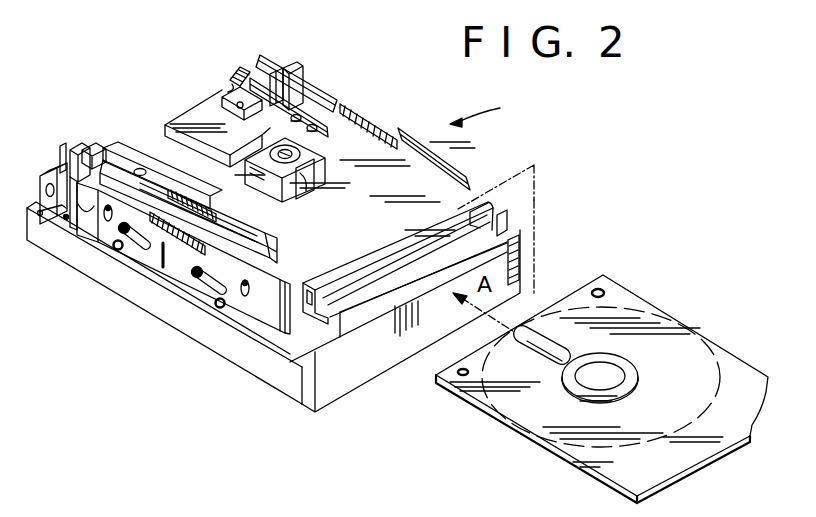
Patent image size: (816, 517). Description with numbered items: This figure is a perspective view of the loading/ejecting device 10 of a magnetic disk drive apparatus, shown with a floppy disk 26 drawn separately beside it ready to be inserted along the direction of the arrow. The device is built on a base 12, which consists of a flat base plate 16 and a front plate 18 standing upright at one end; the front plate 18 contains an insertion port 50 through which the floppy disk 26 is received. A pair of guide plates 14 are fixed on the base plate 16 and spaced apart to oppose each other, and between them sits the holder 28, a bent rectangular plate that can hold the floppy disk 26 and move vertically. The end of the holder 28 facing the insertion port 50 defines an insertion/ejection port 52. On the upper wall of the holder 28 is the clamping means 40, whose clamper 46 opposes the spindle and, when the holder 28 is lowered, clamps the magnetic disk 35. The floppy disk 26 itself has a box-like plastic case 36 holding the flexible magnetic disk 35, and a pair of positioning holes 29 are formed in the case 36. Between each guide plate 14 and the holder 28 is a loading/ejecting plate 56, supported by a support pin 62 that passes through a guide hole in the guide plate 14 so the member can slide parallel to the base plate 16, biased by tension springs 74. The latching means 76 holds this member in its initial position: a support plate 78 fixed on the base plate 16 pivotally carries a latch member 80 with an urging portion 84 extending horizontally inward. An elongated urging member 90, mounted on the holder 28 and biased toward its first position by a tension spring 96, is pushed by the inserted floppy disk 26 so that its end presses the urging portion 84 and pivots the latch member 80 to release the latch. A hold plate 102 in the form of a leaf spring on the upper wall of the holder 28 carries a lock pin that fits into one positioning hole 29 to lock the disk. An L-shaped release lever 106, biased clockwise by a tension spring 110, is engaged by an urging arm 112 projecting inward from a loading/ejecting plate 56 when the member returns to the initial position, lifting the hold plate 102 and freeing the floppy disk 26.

The loading/ejecting device 10 is at (488, 108).
The base 12 is at (212, 353).
The guide plates 14 is at (325, 82).
The base plate 16 is at (55, 250).
The front plate 18 is at (521, 236).
The floppy disk 26 is at (663, 305).
The holder 28 is at (455, 169).
The positioning holes 29 is at (596, 289).
The magnetic disk 35 is at (558, 432).
The case 36 is at (474, 380).
The clamping means 40 is at (331, 167).
The clamper 46 is at (306, 190).
The insertion port 50 is at (352, 323).
The insertion/ejection port 52 is at (534, 190).
The loading/ejecting plates 56 is at (286, 68).
The support pin 62 is at (120, 233).
The tension springs 74 is at (162, 268).
The latching means 76 is at (55, 144).
The support plate 78 is at (46, 182).
The latch member 80 is at (71, 154).
The urging portion 84 is at (100, 158).
The urging member 90 is at (162, 178).
The tension spring 96 is at (208, 203).
The hold plate 102 is at (318, 131).
The release lever 106 is at (222, 97).
The tension spring 110 is at (232, 78).
The urging arm 112 is at (297, 70).